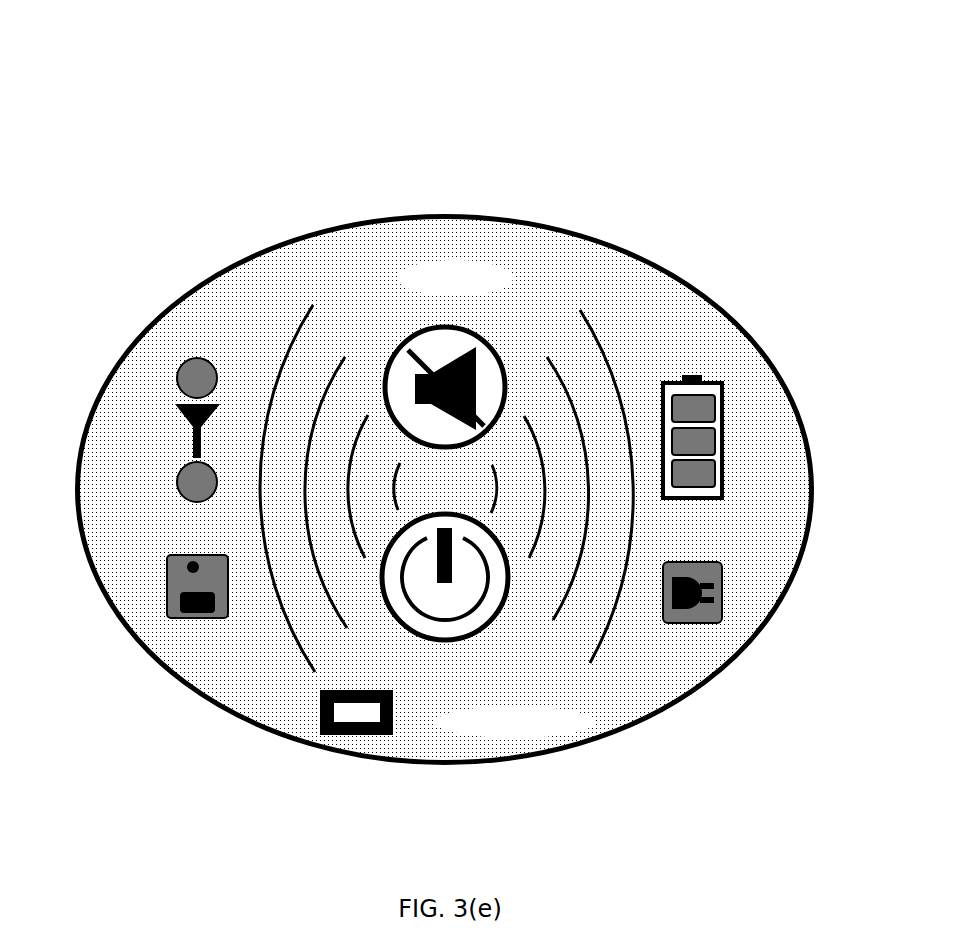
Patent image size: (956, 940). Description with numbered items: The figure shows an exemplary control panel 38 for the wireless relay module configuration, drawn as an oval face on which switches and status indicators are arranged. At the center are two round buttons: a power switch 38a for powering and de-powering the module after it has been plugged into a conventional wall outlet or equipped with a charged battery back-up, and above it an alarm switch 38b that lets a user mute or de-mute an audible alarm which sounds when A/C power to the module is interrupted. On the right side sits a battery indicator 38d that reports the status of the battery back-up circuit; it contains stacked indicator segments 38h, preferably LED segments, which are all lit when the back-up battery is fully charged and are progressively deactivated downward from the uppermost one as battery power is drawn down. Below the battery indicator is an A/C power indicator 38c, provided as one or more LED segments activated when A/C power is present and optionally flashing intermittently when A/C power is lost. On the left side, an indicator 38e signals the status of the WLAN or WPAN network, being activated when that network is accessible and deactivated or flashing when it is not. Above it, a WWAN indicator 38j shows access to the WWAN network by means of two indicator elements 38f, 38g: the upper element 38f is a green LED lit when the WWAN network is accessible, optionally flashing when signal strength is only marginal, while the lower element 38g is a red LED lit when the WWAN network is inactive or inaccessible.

The control panel 38 is at (470, 53).
The power switch 38a is at (500, 613).
The alarm switch 38b is at (508, 357).
The A/C power indicator 38c is at (732, 625).
The battery indicator 38d is at (722, 430).
The WLAN/WPAN network status indicator 38e is at (170, 612).
The indicator element 38f is at (190, 357).
The indicator element 38g is at (183, 498).
The indicator segments 38h is at (713, 472).
The WWAN indicator 38j is at (180, 428).